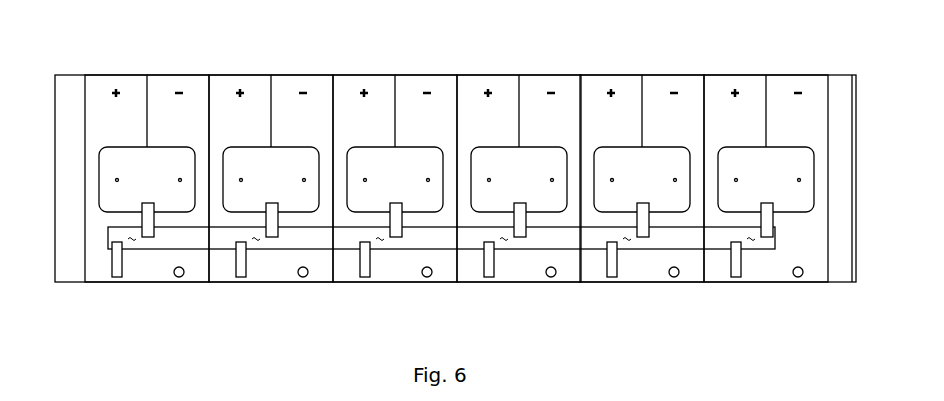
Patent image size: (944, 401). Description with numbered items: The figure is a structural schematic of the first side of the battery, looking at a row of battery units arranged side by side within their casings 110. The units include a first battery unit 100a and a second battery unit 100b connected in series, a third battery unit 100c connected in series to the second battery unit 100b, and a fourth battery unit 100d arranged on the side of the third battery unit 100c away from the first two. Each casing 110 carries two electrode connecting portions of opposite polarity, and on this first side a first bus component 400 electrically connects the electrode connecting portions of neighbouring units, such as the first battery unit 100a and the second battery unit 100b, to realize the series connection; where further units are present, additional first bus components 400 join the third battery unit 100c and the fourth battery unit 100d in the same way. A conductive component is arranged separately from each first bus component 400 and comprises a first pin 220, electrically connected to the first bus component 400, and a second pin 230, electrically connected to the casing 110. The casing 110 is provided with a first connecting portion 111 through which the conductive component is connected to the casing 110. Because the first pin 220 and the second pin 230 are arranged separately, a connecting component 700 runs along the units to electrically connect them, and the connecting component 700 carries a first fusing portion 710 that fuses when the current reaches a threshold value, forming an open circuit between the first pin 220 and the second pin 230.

The first battery unit 100a is at (113, 74).
The second battery unit 100b is at (175, 74).
The third battery unit 100c is at (237, 74).
The fourth battery unit 100d is at (298, 74).
The casing 110 is at (327, 283).
The first connecting portion 111 is at (302, 279).
The first pin 220 is at (150, 211).
The second pin 230 is at (115, 279).
The first bus component 400 is at (133, 152).
The connecting component 700 is at (441, 245).
The first fusing portion 710 is at (136, 242).